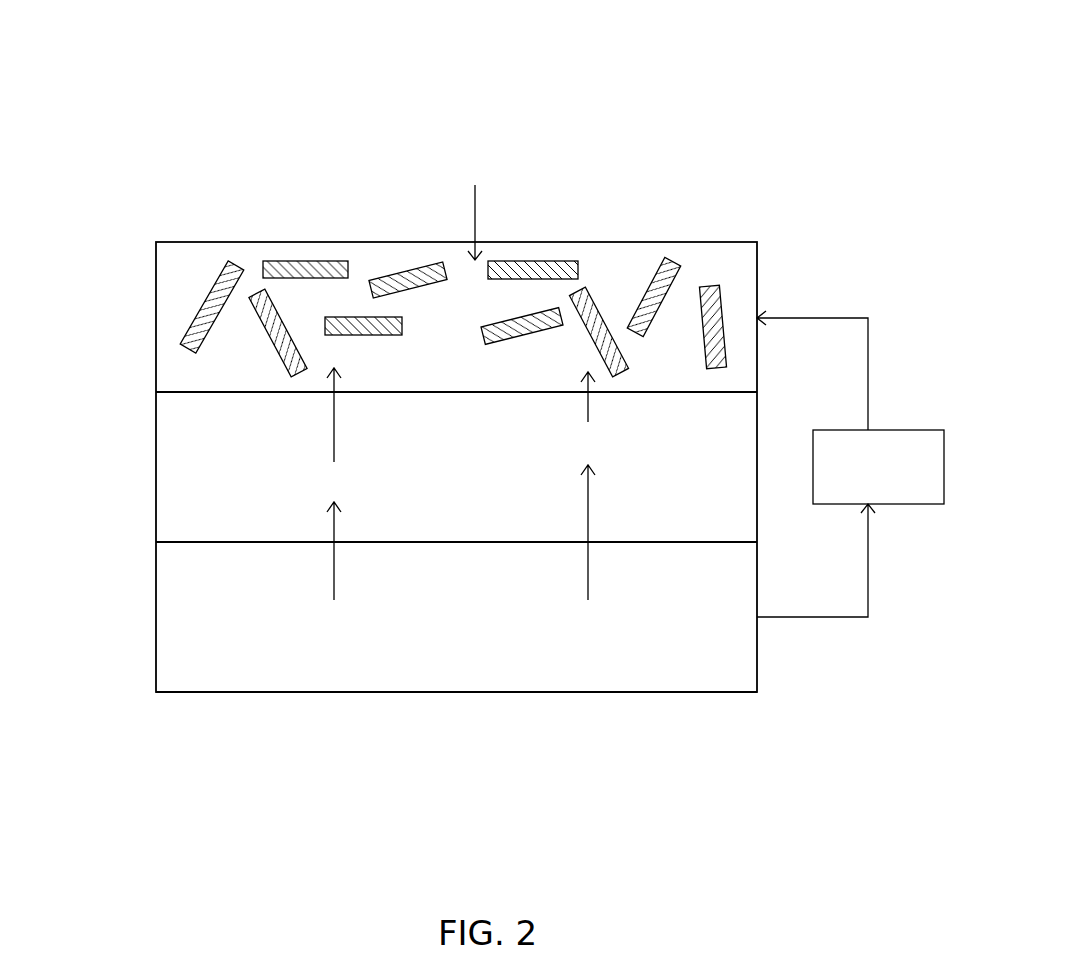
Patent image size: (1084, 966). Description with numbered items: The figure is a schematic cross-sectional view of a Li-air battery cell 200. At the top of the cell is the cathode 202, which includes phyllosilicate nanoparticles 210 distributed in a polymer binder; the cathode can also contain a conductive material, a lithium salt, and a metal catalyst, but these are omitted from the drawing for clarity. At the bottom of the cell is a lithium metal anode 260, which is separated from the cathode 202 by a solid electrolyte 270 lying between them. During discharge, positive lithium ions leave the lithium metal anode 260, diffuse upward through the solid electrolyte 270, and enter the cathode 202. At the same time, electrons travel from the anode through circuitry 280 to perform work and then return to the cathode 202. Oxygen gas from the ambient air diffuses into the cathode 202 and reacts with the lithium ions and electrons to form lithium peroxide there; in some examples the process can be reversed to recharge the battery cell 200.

The Li-air battery cell 200 is at (158, 61).
The cathode 202 is at (607, 242).
The phyllosilicate nanoparticles 210 is at (672, 260).
The lithium metal anode 260 is at (653, 692).
The solid electrolyte 270 is at (155, 475).
The circuitry 280 is at (890, 428).